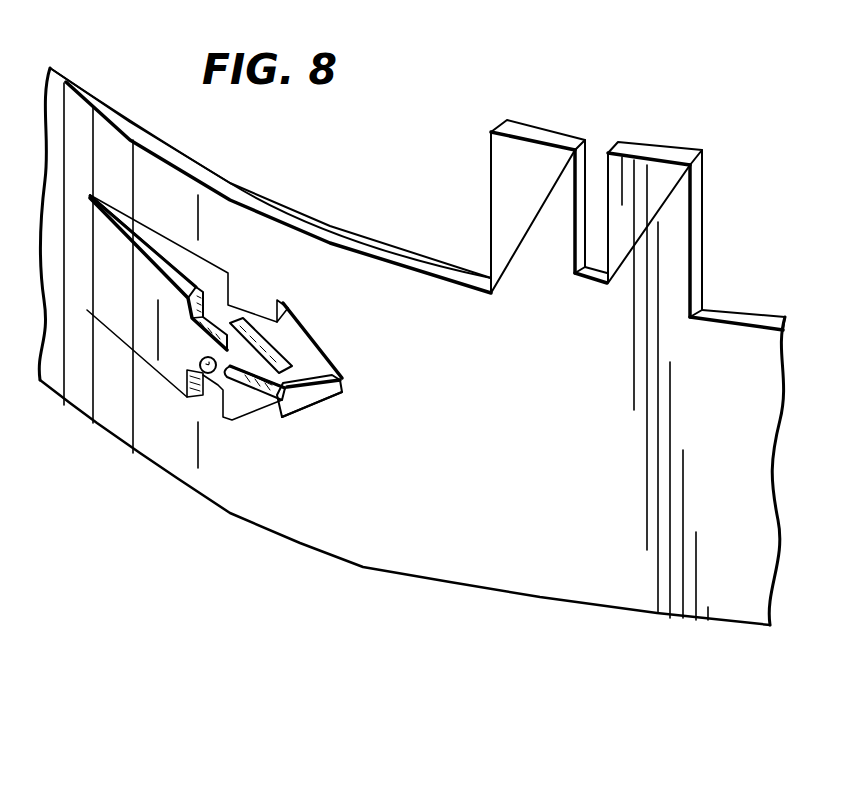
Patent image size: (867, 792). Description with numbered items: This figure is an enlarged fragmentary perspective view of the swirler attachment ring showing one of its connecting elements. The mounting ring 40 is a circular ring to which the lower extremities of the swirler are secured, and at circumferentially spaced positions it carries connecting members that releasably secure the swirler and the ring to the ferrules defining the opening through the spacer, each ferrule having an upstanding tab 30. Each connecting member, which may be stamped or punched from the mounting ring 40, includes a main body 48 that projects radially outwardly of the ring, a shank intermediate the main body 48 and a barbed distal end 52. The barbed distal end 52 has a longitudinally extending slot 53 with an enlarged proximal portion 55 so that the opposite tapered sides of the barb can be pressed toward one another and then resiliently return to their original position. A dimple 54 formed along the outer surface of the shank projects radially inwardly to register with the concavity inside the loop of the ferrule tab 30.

The upstanding tab 30 is at (503, 212).
The mounting ring 40 is at (320, 220).
The main body 48 is at (140, 277).
The barbed distal end 52 is at (277, 360).
The longitudinally extending slot 53 is at (297, 378).
The dimple 54 is at (218, 393).
The enlarged proximal portion 55 is at (238, 400).